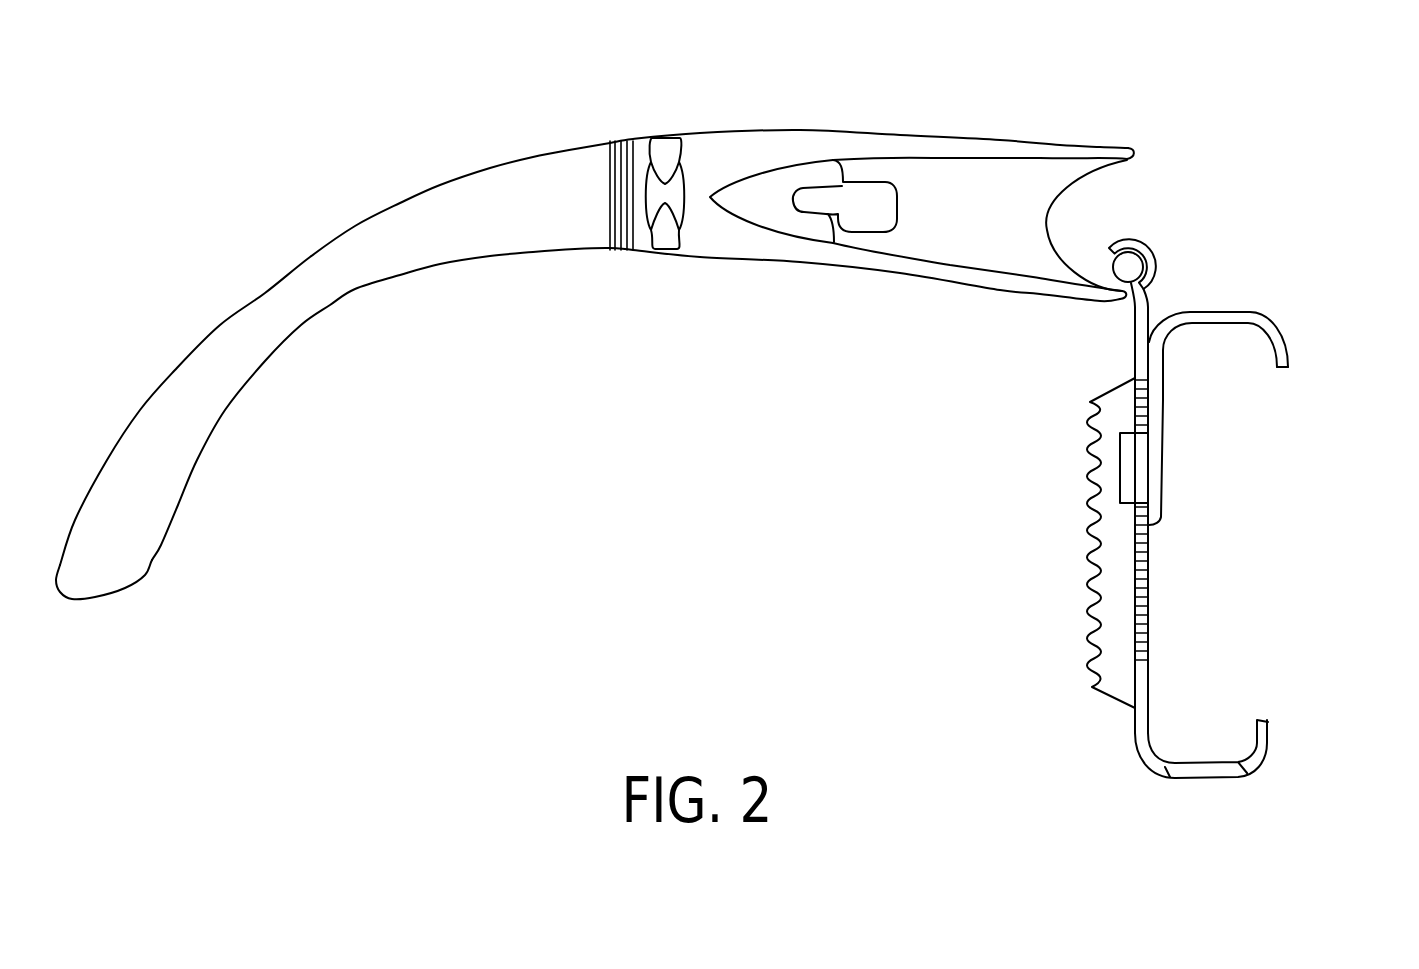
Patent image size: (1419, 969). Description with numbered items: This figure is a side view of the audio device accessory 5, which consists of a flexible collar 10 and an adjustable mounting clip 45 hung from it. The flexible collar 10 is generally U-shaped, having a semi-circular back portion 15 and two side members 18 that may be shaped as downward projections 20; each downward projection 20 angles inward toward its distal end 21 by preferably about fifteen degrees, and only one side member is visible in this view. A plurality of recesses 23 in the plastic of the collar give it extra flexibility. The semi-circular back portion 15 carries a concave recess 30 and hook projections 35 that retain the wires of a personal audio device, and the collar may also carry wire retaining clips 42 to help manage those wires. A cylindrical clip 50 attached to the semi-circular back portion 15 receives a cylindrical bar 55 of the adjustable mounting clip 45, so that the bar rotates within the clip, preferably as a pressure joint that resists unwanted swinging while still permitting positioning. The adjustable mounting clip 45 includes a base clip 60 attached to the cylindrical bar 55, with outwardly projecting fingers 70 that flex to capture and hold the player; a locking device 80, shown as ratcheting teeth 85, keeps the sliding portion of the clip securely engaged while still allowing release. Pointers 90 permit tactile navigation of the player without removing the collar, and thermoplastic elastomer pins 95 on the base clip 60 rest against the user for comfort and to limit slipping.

The audio device accessory 5 is at (535, 618).
The flexible collar 10 is at (667, 330).
The semi-circular back portion 15 is at (1002, 138).
The side members 18 is at (472, 173).
The downward projections 20 is at (334, 304).
The distal end 21 is at (67, 606).
The recesses 23 is at (615, 142).
The concave recess 30 is at (1085, 210).
The hook projections 35 is at (820, 213).
The wire retaining clips 42 is at (667, 138).
The adjustable mounting clip 45 is at (1313, 488).
The cylindrical clip 50 is at (1155, 250).
The cylindrical bar 55 is at (1135, 267).
The base clip 60 is at (1162, 392).
The fingers 70 is at (1253, 313).
The locking device 80 is at (1152, 467).
The ratcheting teeth 85 is at (1150, 520).
The pointers 90 is at (1292, 357).
The thermoplastic elastomer pins 95 is at (1090, 545).